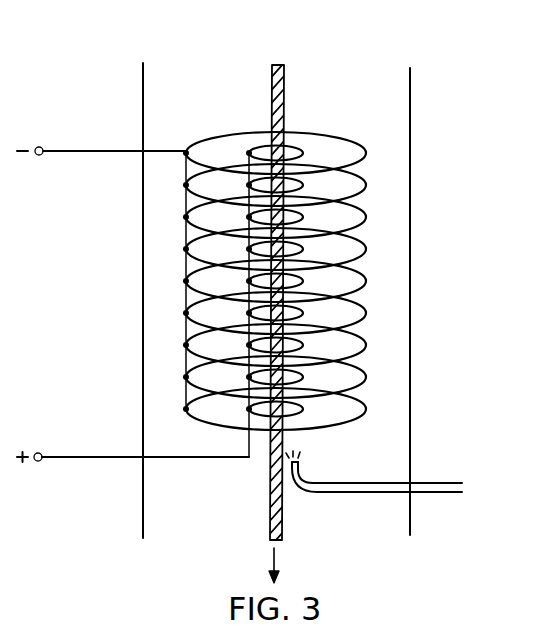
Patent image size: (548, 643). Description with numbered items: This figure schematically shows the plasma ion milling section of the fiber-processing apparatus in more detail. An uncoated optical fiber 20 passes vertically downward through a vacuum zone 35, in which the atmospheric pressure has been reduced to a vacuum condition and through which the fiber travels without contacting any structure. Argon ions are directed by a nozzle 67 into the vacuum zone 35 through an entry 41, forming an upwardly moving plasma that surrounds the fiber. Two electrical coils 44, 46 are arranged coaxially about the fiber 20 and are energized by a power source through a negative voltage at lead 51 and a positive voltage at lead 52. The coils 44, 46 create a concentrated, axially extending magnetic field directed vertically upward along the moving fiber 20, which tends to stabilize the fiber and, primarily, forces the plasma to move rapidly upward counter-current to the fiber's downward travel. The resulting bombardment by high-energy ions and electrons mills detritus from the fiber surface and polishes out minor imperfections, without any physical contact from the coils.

The optical fiber 20 is at (288, 74).
The vacuum zone 35 is at (416, 194).
The entry 41 is at (447, 483).
The electrical coil 44 is at (298, 150).
The electrical coil 46 is at (352, 145).
The lead 51 is at (88, 152).
The lead 52 is at (90, 458).
The nozzle 67 is at (318, 480).